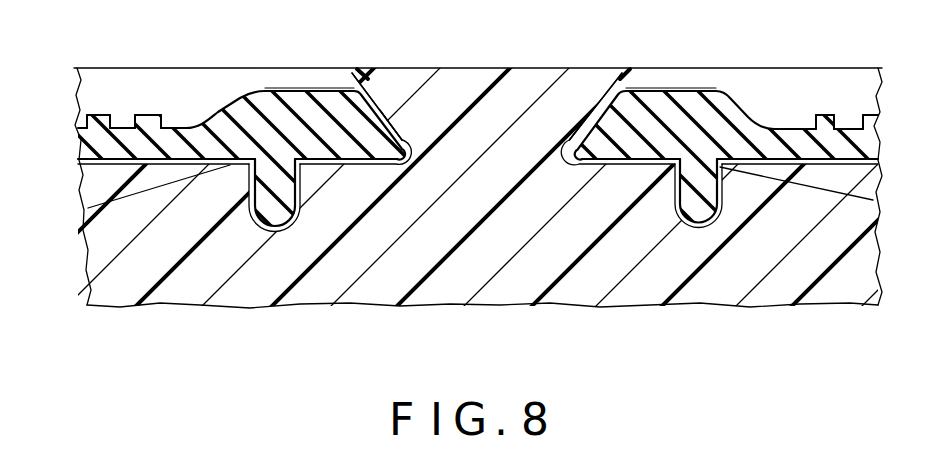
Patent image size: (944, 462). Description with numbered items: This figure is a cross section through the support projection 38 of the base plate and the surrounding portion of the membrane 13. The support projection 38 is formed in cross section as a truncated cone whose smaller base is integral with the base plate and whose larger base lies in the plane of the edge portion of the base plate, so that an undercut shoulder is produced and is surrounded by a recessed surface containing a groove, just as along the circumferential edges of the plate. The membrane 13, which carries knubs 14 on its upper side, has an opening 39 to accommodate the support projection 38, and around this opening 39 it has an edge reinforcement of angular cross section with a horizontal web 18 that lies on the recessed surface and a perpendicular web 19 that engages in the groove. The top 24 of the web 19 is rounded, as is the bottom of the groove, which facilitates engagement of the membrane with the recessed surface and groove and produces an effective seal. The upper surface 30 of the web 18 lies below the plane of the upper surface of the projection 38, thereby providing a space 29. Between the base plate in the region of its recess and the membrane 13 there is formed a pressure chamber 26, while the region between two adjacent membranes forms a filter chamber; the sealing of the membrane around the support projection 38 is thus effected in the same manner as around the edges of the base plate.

The membrane 13 is at (167, 140).
The knubs 14 is at (136, 116).
The web 18 is at (359, 133).
The web 19 is at (262, 193).
The top of the web 24 is at (262, 232).
The pressure chamber 26 is at (100, 183).
The space 29 is at (308, 84).
The upper surface of the web 30 is at (263, 90).
The support projection 38 is at (513, 85).
The opening 39 is at (393, 128).